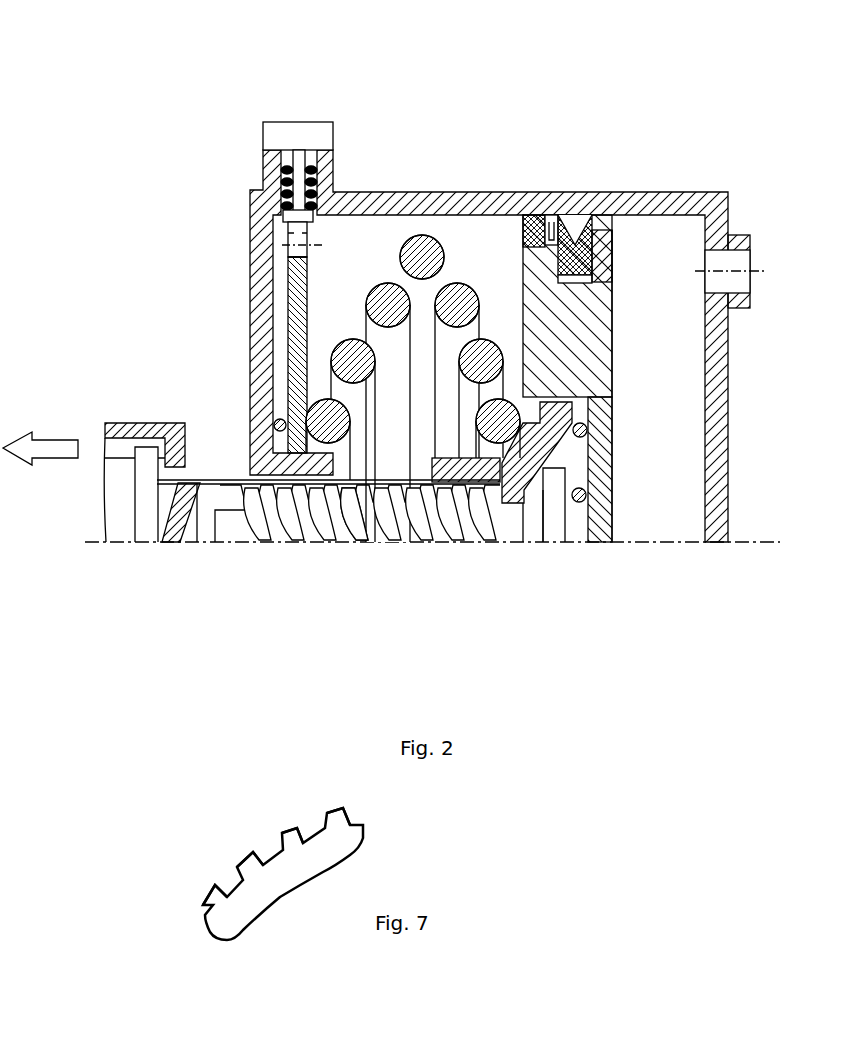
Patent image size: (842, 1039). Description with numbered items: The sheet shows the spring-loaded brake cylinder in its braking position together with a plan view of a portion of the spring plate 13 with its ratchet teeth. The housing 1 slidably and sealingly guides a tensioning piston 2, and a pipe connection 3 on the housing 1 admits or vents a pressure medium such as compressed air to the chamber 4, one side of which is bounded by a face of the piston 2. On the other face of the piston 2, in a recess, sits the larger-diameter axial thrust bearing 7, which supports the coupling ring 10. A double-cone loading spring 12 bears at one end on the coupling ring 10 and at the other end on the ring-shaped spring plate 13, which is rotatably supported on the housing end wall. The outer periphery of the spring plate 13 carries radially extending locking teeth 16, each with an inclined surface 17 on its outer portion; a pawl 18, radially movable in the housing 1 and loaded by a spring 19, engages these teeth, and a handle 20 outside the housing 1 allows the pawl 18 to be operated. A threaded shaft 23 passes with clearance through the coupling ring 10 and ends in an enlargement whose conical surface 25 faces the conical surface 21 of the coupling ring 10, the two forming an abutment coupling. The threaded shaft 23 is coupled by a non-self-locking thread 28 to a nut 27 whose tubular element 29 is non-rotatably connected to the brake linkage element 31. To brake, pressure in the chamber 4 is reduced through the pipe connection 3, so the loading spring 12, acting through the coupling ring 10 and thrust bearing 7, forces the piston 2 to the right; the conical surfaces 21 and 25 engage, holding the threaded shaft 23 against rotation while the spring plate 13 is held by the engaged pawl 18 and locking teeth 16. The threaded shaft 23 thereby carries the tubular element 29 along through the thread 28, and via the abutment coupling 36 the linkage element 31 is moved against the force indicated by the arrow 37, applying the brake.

In FIG. 2, the housing 1 is at (497, 205).
In FIG. 2, the tensioning piston 2 is at (557, 255).
In FIG. 2, the pipe connection 3 is at (740, 260).
In FIG. 2, the chamber 4 is at (660, 240).
In FIG. 2, the axial thrust bearing 7 is at (588, 430).
In FIG. 2, the coupling ring 10 is at (523, 460).
In FIG. 2, the loading spring 12 is at (423, 257).
In FIG. 2, the spring plate 13 is at (296, 305).
In FIG. 7, the spring plate 13 is at (294, 875).
In FIG. 2, the locking teeth 16 is at (305, 232).
In FIG. 7, the locking teeth 16 is at (338, 825).
In FIG. 7, the inclined surface 17 is at (240, 872).
In FIG. 2, the pawl 18 is at (285, 216).
In FIG. 2, the spring 19 is at (290, 177).
In FIG. 2, the handle 20 is at (286, 134).
In FIG. 2, the conical surface 21 is at (558, 457).
In FIG. 2, the threaded shaft 23 is at (407, 525).
In FIG. 2, the conical surface 25 is at (533, 517).
In FIG. 2, the nut 27 is at (366, 517).
In FIG. 2, the non-self-locking thread 28 is at (312, 520).
In FIG. 2, the tubular element 29 is at (213, 485).
In FIG. 2, the brake linkage element 31 is at (118, 427).
In FIG. 2, the abutment coupling 36 is at (175, 460).
In FIG. 2, the arrow 37 is at (58, 450).